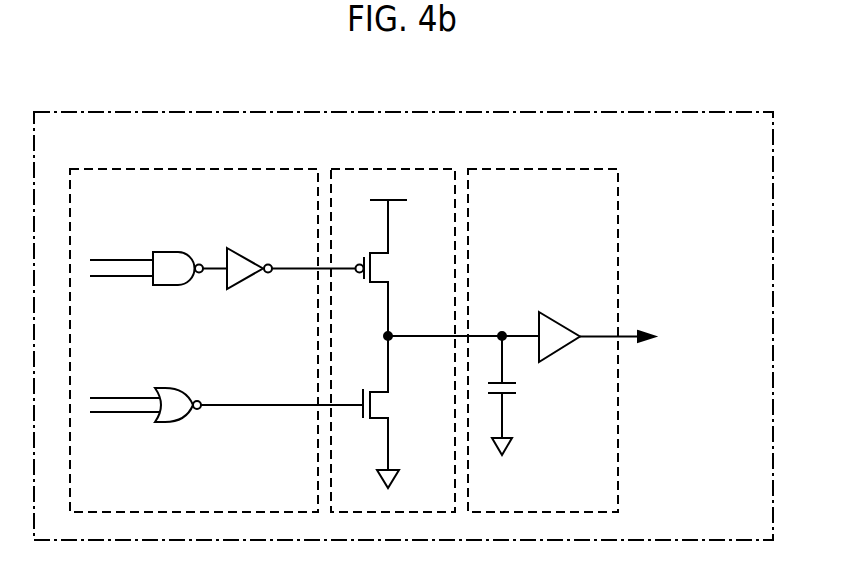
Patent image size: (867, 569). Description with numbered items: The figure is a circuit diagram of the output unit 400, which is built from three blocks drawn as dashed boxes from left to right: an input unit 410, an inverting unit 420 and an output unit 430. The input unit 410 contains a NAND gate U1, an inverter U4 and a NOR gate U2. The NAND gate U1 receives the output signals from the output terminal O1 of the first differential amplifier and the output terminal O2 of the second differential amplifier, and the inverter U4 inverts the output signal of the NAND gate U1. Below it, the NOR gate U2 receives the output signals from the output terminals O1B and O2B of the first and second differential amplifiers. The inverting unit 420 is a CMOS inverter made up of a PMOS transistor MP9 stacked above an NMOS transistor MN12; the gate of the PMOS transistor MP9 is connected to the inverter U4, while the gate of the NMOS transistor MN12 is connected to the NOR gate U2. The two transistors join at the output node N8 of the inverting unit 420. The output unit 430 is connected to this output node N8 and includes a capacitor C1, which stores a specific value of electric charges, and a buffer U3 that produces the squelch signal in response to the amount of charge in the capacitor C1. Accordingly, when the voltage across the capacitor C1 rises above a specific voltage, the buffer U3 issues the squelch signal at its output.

The output unit 400 is at (722, 113).
The input unit 410 is at (273, 168).
The inverting unit 420 is at (410, 168).
The output unit 430 is at (570, 168).
The NAND gate U1 is at (176, 252).
The inverter U4 is at (251, 259).
The NOR gate U2 is at (175, 388).
The PMOS transistor MP9 is at (392, 268).
The NMOS transistor MN12 is at (402, 412).
The output node N8 is at (461, 326).
The capacitor C1 is at (517, 395).
The buffer U3 is at (557, 327).